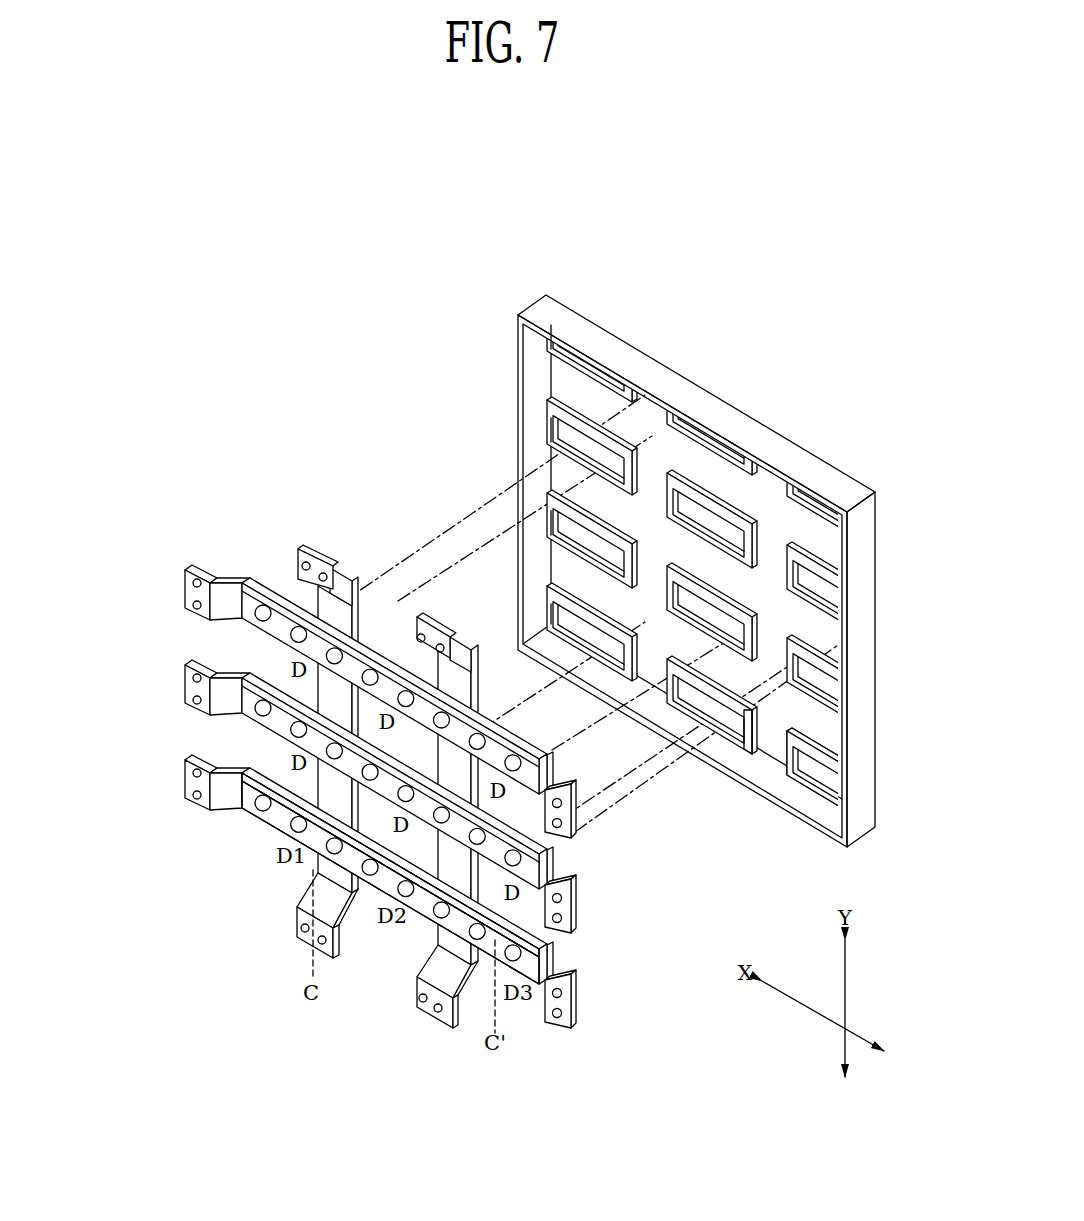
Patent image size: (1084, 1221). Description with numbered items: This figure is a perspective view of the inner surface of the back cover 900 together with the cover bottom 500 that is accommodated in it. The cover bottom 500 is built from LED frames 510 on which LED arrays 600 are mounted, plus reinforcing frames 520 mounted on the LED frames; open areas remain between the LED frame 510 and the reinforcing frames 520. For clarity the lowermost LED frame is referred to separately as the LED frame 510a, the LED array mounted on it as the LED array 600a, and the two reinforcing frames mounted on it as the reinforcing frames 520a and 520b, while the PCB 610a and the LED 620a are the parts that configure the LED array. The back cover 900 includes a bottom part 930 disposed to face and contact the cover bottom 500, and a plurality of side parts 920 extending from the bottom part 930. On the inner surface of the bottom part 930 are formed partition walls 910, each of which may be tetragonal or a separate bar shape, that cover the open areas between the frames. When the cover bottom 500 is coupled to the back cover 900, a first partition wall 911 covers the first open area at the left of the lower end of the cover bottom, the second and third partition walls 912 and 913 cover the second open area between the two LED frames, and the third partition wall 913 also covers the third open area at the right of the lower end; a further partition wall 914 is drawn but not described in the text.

The cover bottom 500 is at (283, 478).
The LED frame 510 is at (188, 562).
The reinforcing frame 520 is at (300, 548).
The LED array 600 is at (240, 615).
The LED frame 510a is at (185, 770).
The reinforcing frame 520a is at (330, 867).
The reinforcing frame 520b is at (450, 933).
The LED array 600a is at (180, 825).
The PCB 610a is at (287, 810).
The LED 620a is at (288, 824).
The back cover 900 is at (858, 341).
The partition wall 910 is at (704, 445).
The side part 920 is at (774, 450).
The bottom part 930 is at (806, 527).
The first partition wall 911 is at (620, 673).
The second partition wall 912 is at (663, 698).
The third partition wall 913 is at (745, 745).
The fourth coupling rib 914 is at (810, 780).